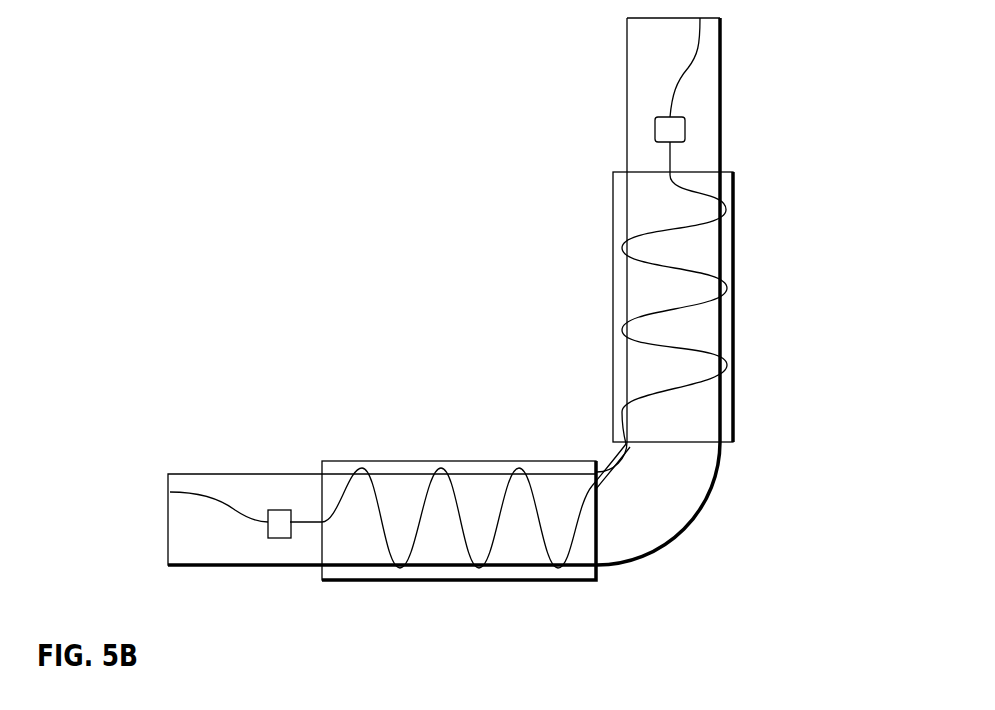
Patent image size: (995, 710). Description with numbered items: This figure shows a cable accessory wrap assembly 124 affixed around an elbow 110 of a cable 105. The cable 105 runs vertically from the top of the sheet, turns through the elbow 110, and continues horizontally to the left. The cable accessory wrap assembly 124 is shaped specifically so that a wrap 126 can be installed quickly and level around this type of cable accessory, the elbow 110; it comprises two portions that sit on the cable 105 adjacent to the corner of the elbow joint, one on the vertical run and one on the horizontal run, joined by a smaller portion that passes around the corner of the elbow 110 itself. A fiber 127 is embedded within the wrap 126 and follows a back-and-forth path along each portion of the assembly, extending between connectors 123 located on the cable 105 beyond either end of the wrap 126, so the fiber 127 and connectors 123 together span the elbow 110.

The cable 105 is at (645, 77).
The elbow 110 is at (647, 517).
The connectors 123 is at (658, 132).
The cable accessory wrap assembly 124 is at (478, 462).
The wrap 126 is at (660, 209).
The fiber 127 is at (700, 197).